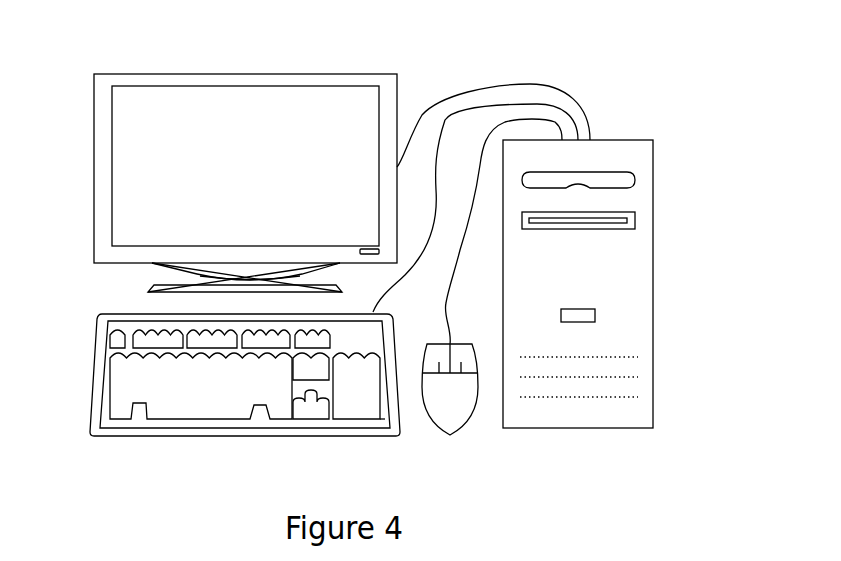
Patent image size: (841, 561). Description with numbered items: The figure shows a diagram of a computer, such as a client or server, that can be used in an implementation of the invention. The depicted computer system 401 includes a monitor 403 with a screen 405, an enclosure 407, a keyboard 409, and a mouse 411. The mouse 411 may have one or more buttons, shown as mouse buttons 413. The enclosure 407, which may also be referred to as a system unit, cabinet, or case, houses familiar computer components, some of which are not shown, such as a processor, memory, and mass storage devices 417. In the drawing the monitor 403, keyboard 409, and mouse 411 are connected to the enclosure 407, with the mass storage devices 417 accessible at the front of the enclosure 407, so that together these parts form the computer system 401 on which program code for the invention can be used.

The computer system 401 is at (427, 42).
The monitor 403 is at (238, 74).
The screen 405 is at (132, 165).
The enclosure 407 is at (653, 310).
The keyboard 409 is at (97, 372).
The mouse 411 is at (437, 420).
The mouse buttons 413 is at (440, 375).
The mass storage devices 417 is at (628, 173).